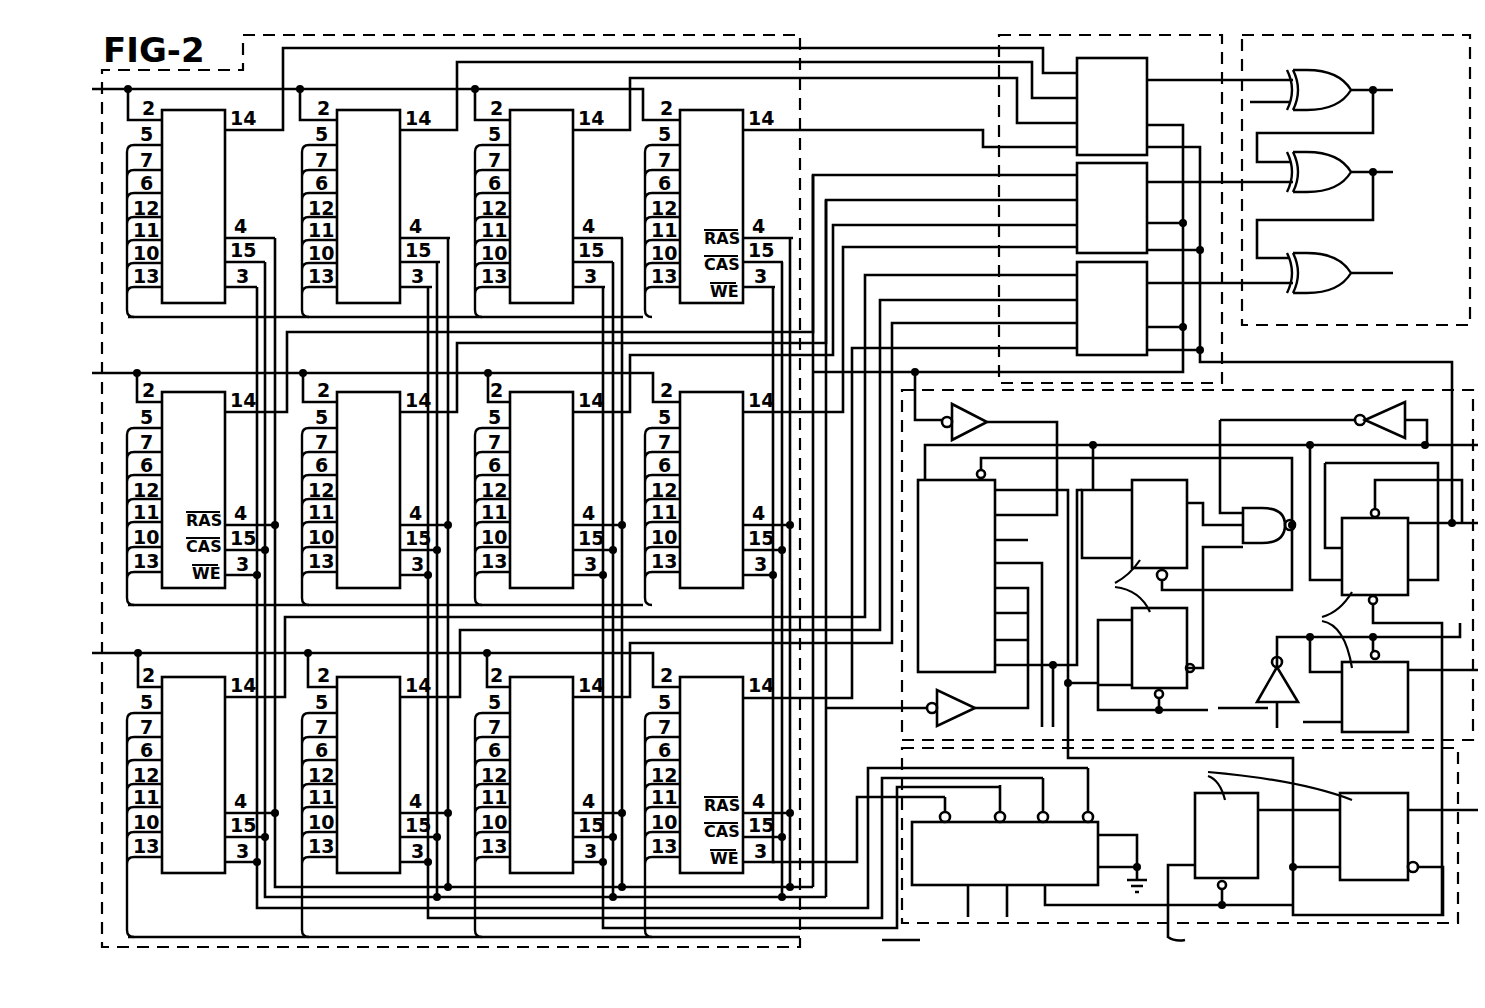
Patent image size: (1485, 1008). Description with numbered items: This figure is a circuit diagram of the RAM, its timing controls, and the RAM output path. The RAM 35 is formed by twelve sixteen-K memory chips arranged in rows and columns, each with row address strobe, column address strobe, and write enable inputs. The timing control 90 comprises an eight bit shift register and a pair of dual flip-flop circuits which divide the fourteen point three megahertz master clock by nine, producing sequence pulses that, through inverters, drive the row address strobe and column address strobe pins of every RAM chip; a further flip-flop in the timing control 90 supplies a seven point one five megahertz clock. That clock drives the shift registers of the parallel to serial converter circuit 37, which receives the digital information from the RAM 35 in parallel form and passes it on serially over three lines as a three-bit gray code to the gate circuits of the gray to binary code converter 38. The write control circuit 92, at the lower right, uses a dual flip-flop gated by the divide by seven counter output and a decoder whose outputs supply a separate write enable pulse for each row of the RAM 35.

The RAM 35 is at (802, 138).
The parallel to serial converter circuit 37 is at (998, 112).
The gray to binary code converter 38 is at (1298, 327).
The timing control 90 is at (1192, 392).
The write control circuit 92 is at (1330, 750).